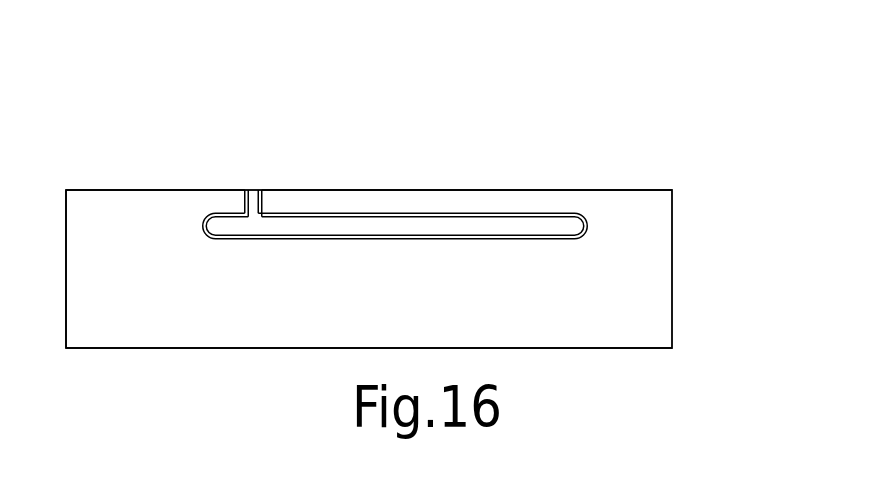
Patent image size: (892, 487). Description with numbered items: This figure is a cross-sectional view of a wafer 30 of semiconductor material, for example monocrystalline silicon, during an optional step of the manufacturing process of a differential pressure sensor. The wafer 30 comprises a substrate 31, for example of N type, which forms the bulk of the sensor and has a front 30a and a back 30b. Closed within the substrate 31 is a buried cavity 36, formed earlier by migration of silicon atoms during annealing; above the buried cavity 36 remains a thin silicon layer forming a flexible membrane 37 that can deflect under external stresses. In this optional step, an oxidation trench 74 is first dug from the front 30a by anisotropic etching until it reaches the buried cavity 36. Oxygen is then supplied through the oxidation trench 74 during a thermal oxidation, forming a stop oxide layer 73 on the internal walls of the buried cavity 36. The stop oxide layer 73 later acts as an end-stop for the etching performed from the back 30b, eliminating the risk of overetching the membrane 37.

The wafer 30 is at (735, 259).
The front 30a is at (104, 178).
The back 30b is at (89, 358).
The substrate 31 is at (647, 316).
The buried cavity 36 is at (570, 226).
The membrane 37 is at (320, 200).
The stop oxide layer 73 is at (408, 216).
The oxidation trench 74 is at (246, 177).